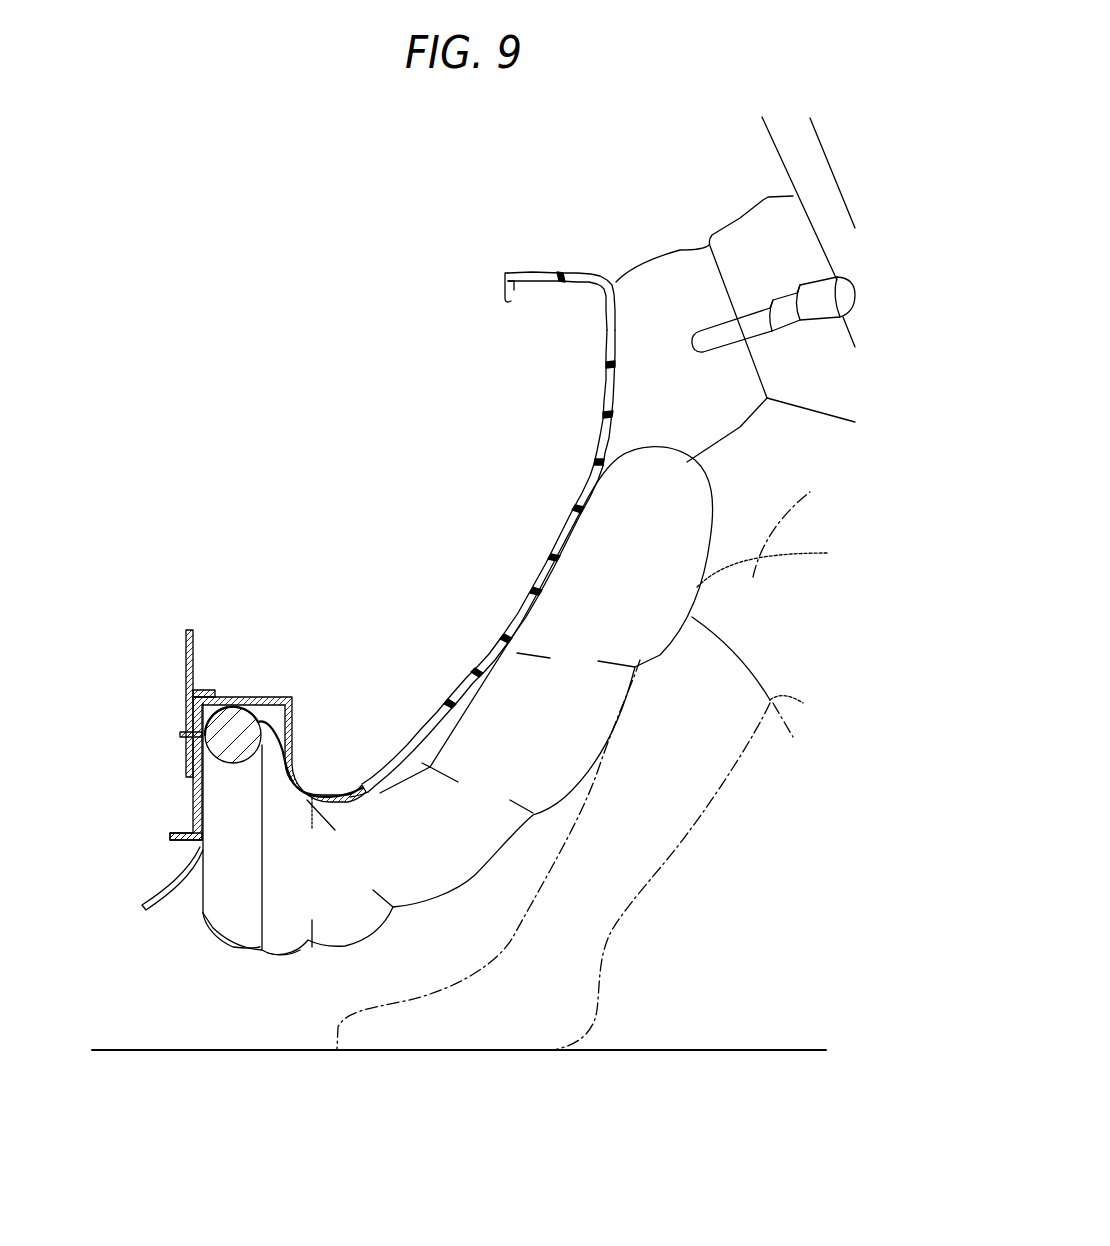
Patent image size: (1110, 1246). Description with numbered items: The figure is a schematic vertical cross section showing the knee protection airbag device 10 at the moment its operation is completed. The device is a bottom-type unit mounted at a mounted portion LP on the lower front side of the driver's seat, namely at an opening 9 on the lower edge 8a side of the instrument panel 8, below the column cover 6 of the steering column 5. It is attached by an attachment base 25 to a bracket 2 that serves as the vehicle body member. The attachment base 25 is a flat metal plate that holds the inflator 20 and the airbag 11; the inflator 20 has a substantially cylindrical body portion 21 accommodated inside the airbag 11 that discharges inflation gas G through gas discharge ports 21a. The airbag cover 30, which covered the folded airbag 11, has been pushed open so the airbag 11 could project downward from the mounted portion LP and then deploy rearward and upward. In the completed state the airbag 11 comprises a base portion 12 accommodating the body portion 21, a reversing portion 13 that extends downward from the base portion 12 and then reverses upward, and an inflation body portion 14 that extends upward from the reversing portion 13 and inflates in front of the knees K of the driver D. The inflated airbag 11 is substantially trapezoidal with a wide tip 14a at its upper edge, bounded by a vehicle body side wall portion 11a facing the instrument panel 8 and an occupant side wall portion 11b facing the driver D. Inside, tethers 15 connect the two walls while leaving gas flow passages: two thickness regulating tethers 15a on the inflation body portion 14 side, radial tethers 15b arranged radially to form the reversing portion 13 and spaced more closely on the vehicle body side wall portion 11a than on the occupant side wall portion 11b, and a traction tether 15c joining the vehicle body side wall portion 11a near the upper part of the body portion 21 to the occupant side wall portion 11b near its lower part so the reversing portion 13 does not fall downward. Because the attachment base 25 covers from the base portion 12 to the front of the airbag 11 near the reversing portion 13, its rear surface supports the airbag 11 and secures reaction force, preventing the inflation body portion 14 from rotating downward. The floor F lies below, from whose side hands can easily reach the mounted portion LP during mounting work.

The bracket 2 is at (186, 655).
The steering column 5 is at (633, 248).
The column cover 6 is at (633, 297).
The instrument panel 8 is at (537, 573).
The lower edge 8a is at (375, 777).
The opening 9 is at (335, 765).
The knee protection airbag device 10 is at (297, 632).
The airbag 11 is at (563, 806).
The vehicle body side wall portion 11a is at (507, 620).
The occupant side wall portion 11b is at (660, 667).
The base portion 12 is at (278, 716).
The reversing portion 13 is at (283, 960).
The inflation body portion 14 is at (617, 740).
The tip 14a is at (673, 447).
The tethers 15 is at (458, 701).
The thickness regulating tether 15a is at (633, 664).
The radial tether 15b is at (314, 927).
The traction tether 15c is at (260, 917).
The inflator 20 is at (233, 735).
The body portion 21 is at (237, 707).
The gas discharge port 21a is at (190, 705).
The attachment base 25 is at (193, 803).
The airbag cover 30 is at (283, 693).
The driver D is at (791, 527).
The knee K is at (789, 740).
The floor F is at (155, 1048).
The inflation gas G is at (233, 825).
The mounted portion LP is at (133, 886).